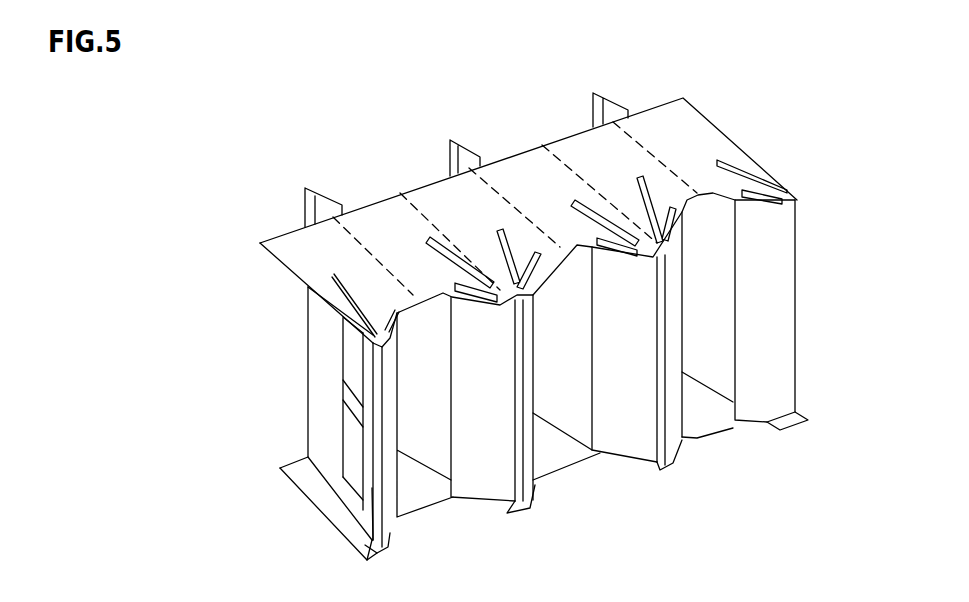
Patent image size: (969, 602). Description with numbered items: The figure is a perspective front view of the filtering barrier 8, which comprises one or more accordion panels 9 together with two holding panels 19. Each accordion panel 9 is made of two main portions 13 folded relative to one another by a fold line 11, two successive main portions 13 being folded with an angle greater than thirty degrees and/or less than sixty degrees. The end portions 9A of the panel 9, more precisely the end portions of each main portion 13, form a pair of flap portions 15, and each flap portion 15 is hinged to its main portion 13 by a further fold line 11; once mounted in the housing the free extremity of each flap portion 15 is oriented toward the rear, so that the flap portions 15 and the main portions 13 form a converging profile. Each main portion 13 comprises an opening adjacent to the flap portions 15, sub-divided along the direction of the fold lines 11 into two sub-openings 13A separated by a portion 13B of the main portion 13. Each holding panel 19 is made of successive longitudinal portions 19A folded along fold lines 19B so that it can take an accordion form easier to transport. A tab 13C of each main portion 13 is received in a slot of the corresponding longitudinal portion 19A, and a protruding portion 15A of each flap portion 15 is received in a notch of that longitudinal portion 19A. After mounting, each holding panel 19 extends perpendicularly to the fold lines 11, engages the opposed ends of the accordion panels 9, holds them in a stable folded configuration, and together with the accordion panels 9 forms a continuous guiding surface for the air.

The filtering barrier 8 is at (748, 90).
The accordion panel 9 is at (293, 206).
The end portion 9A is at (372, 490).
The fold line 11 is at (308, 333).
The main portion 13 is at (334, 372).
The sub-opening 13A is at (350, 457).
The portion of the main portion 13B is at (357, 405).
The tab 13C is at (735, 168).
The flap portion 15 is at (484, 402).
The protruding portion 15A is at (783, 197).
The holding panel 19 is at (250, 242).
The longitudinal portion 19A is at (411, 238).
The fold line 19B is at (641, 138).